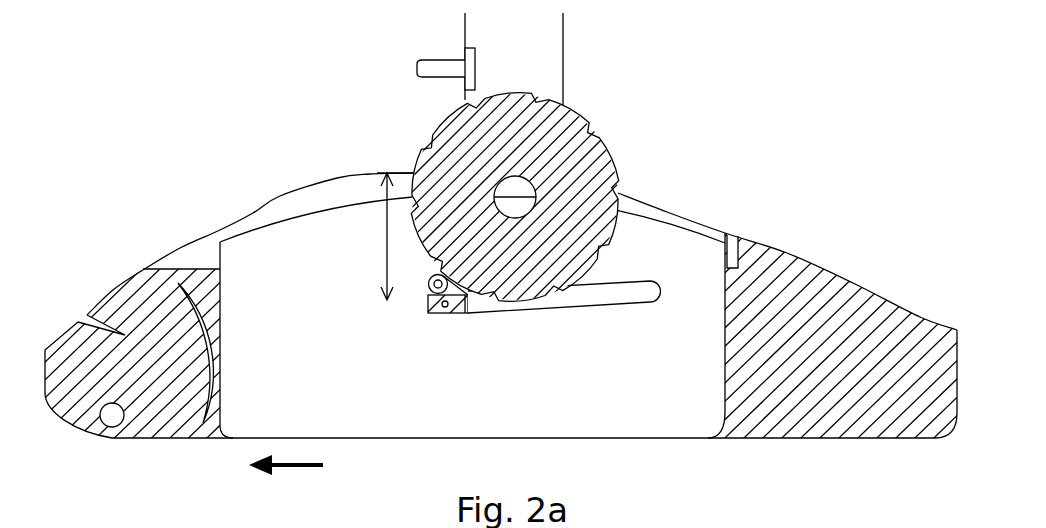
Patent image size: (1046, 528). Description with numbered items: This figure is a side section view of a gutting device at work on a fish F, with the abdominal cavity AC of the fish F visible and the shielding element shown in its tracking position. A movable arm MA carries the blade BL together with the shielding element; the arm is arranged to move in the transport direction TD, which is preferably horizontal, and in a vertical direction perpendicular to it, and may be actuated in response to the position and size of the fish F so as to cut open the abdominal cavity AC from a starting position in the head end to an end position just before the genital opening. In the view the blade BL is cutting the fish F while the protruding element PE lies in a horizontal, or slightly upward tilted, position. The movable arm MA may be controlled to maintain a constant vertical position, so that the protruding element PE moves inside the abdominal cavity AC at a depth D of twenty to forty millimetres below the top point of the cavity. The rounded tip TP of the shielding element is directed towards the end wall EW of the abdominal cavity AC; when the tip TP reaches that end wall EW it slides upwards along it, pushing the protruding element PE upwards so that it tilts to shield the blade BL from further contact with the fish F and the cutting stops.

The movable arm MA is at (490, 59).
The blade BL is at (580, 160).
The tip TP is at (655, 283).
The protruding element PE is at (606, 297).
The end wall EW is at (725, 328).
The abdominal cavity AC is at (337, 340).
The depth D is at (385, 236).
The fish F is at (183, 188).
The transport direction TD is at (311, 465).